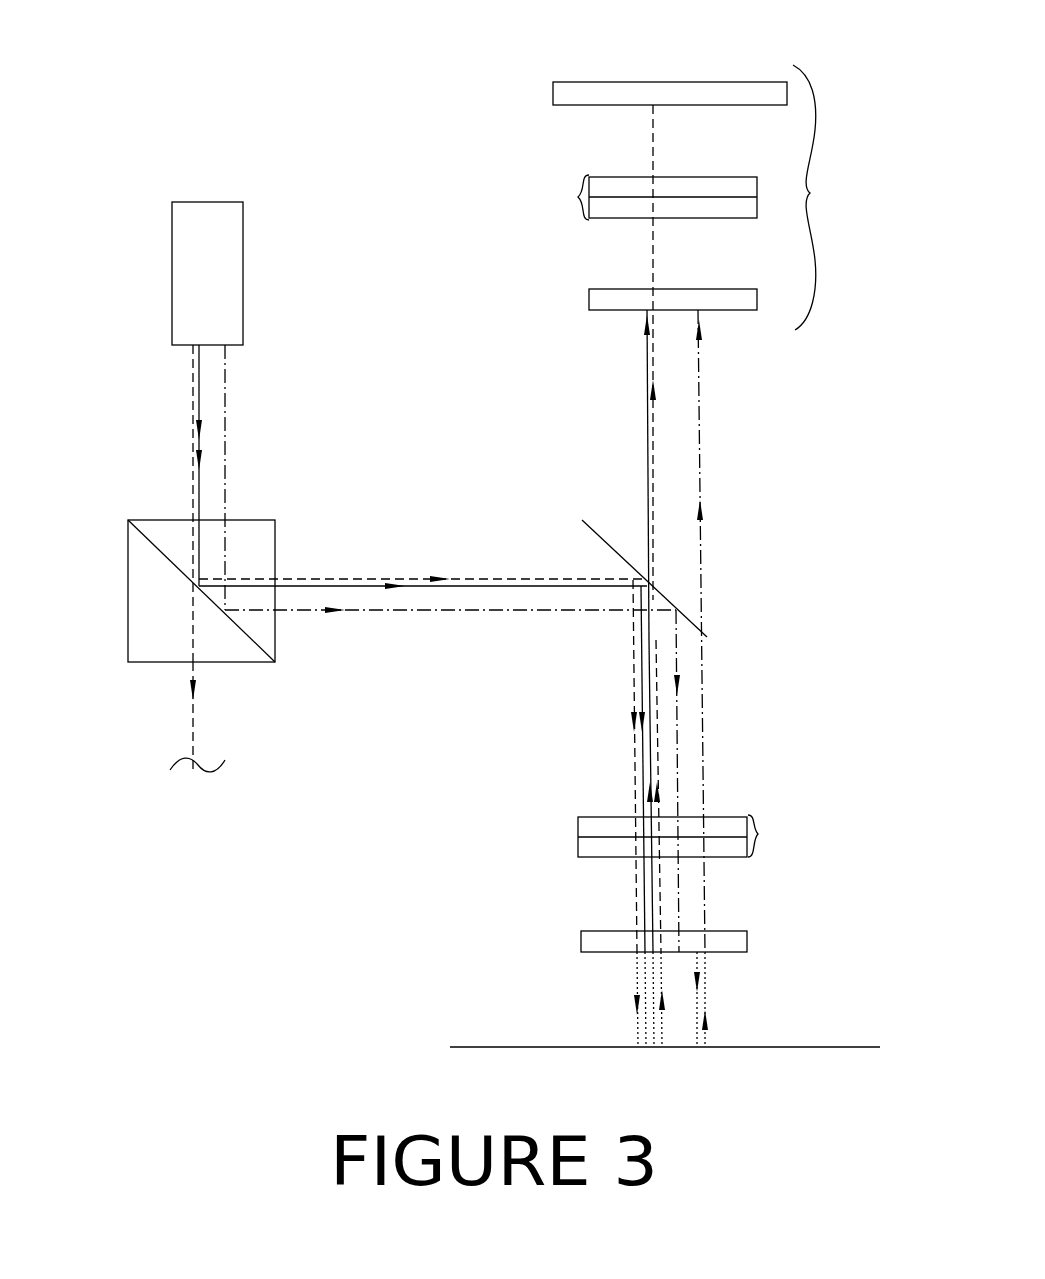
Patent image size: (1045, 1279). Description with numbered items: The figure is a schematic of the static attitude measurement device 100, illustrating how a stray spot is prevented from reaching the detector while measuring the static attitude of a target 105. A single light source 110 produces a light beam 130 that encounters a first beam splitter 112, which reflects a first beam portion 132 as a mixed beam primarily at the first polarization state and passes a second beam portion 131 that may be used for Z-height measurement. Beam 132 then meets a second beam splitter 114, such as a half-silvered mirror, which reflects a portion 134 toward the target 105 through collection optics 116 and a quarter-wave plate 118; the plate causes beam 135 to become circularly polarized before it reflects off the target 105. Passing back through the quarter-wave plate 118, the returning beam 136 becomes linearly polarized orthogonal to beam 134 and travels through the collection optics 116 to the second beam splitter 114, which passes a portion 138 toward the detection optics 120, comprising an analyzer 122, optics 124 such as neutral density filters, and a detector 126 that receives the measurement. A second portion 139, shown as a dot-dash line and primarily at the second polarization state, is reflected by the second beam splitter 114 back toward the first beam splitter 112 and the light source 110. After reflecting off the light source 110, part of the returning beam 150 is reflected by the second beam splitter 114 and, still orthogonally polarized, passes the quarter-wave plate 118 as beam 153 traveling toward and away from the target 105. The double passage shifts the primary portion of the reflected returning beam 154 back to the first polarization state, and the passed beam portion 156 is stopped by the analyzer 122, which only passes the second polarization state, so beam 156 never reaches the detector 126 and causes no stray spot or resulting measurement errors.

The static attitude measurement device 100 is at (382, 122).
The target 105 is at (752, 1047).
The light source 110 is at (172, 250).
The first beam splitter 112 is at (128, 565).
The second beam splitter 114 is at (710, 640).
The collection optics 116 is at (760, 833).
The quarter-wave plate 118 is at (748, 940).
The detection optics 120 is at (828, 197).
The analyzer 122 is at (590, 300).
The optics 124 is at (577, 196).
The detector 126 is at (640, 82).
The light beam 130 is at (197, 378).
The second beam portion 131 is at (197, 730).
The first beam portion 132 is at (468, 586).
The reflected beam 134 is at (640, 692).
The circularly polarized beam 135 is at (637, 978).
The orthogonally polarized beam 136 is at (655, 757).
The passed beam portion 138 is at (648, 458).
The second portion 139 is at (492, 611).
The returning beam 150 is at (672, 646).
The beam traveling toward and away from the target 153 is at (707, 985).
The reflected returning beam 154 is at (703, 690).
The passed beam portion 156 is at (702, 412).